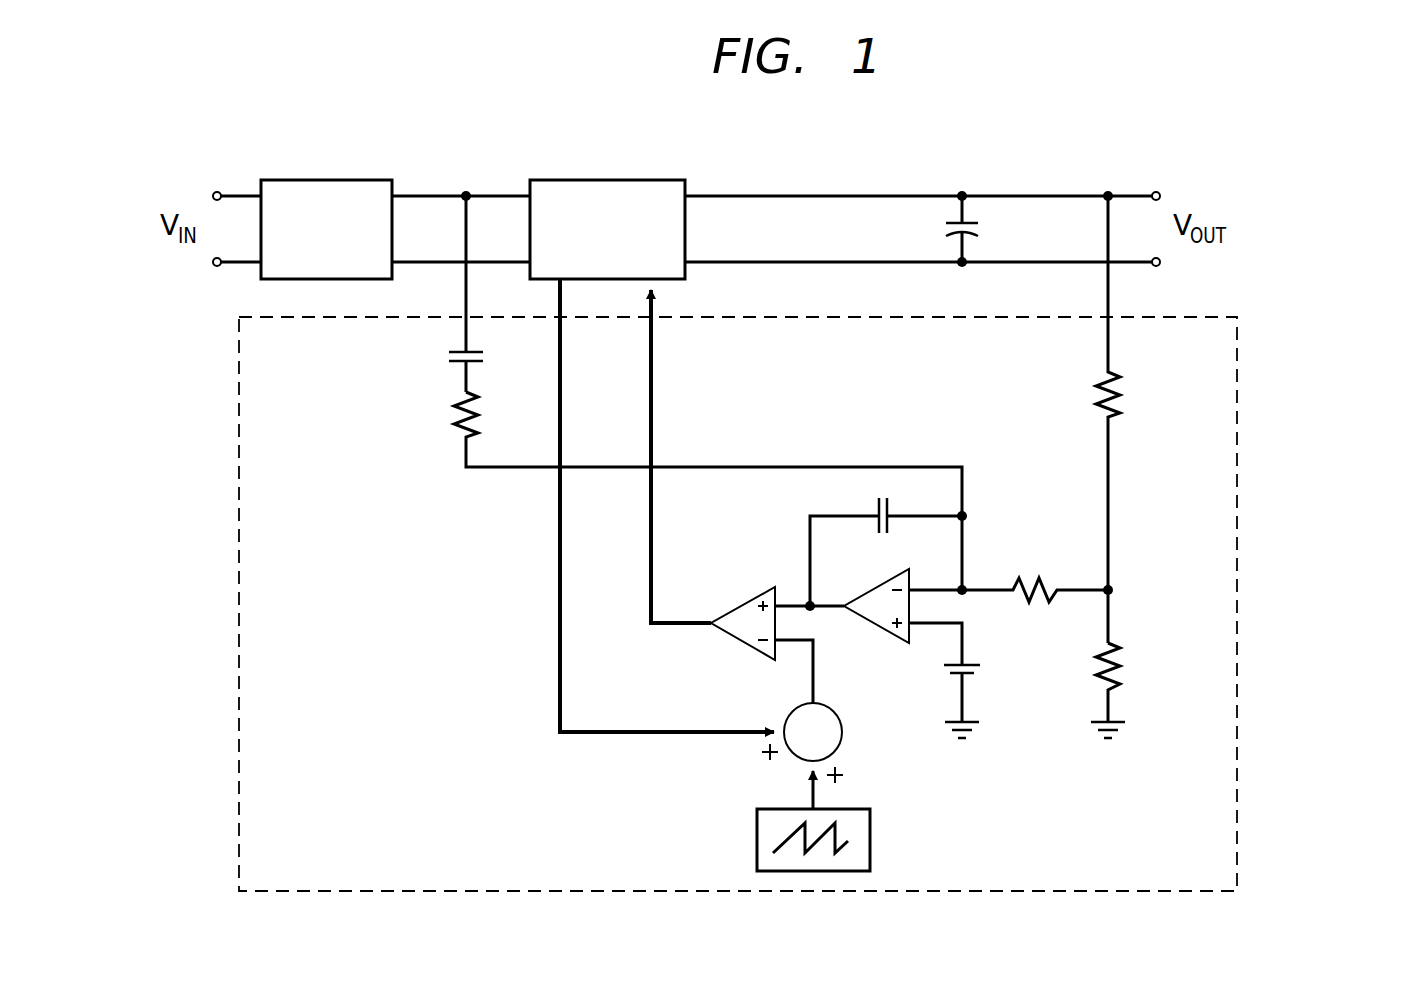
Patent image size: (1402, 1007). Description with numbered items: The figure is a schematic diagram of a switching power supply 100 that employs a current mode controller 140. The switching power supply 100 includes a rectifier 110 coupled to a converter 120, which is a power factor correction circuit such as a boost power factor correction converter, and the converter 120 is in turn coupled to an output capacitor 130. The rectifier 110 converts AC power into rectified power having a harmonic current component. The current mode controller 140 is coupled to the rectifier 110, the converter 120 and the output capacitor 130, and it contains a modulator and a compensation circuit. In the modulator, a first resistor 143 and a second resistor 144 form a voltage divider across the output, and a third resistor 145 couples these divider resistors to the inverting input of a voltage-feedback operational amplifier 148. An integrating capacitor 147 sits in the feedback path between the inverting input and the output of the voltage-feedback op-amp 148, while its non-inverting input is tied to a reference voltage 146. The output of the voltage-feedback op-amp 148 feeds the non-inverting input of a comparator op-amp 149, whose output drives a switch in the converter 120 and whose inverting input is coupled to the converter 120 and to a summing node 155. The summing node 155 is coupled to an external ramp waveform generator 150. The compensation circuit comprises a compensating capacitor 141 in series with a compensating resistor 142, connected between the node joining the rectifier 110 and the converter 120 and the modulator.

The switching power supply 100 is at (1272, 174).
The rectifier 110 is at (298, 178).
The converter 120 is at (588, 178).
The output capacitor 130 is at (940, 228).
The current mode controller 140 is at (237, 336).
The compensating capacitor 141 is at (446, 354).
The compensating resistor 142 is at (454, 418).
The first resistor 143 is at (1120, 393).
The second resistor 144 is at (1120, 664).
The third resistor 145 is at (1033, 577).
The reference voltage 146 is at (978, 669).
The integrating capacitor 147 is at (876, 500).
The voltage-feedback operational amplifier 148 is at (878, 630).
The comparator op-amp 149 is at (746, 603).
The external ramp waveform generator 150 is at (755, 838).
The summing node 155 is at (848, 736).